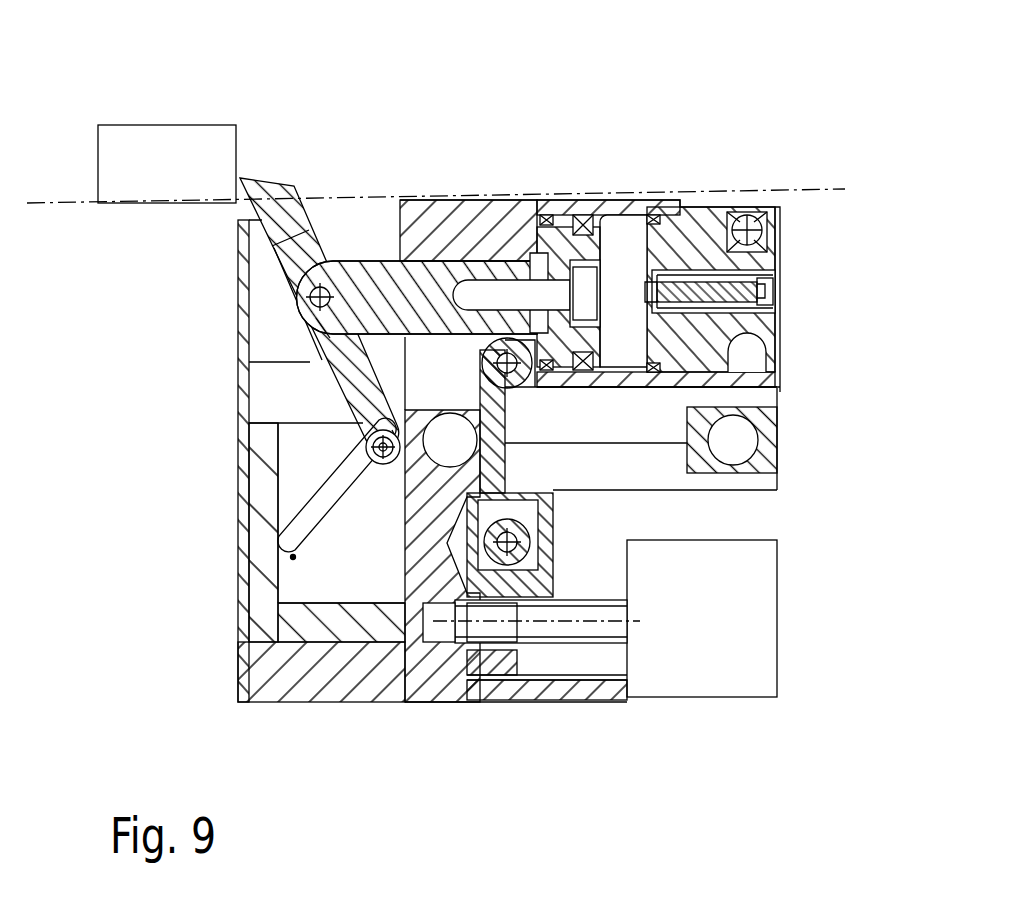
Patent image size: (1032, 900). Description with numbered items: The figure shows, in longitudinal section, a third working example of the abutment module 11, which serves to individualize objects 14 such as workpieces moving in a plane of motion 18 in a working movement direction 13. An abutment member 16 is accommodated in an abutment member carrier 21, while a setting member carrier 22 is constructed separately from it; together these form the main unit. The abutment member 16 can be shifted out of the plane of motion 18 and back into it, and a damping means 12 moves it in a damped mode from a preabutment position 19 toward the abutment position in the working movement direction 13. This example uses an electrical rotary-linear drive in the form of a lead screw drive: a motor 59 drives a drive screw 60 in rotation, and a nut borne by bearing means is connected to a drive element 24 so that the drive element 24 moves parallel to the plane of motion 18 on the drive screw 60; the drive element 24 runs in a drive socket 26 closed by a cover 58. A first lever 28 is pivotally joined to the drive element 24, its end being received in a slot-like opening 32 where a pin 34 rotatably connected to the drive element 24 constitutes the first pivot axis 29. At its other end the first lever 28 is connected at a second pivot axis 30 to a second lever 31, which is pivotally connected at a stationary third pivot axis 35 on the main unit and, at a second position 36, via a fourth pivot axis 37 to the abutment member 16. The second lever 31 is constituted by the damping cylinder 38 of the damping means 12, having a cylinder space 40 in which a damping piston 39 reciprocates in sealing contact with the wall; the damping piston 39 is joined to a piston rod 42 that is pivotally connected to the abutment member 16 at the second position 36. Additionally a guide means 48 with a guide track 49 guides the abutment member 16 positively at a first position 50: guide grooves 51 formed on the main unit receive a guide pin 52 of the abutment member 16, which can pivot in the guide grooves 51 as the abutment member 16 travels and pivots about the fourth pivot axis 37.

The abutment module 11 is at (758, 113).
The damping means 12 is at (784, 255).
The working movement direction 13 is at (500, 148).
The objects 14 is at (140, 142).
The abutment member 16 is at (263, 200).
The plane of motion 18 is at (316, 196).
The preabutment position 19 is at (244, 160).
The abutment member carrier 21 is at (260, 667).
The setting member carrier 22 is at (433, 683).
The drive element 24 is at (490, 580).
The drive socket 26 is at (607, 665).
The first lever 28 is at (498, 427).
The first pivot axis 29 is at (537, 538).
The second pivot axis 30 is at (500, 365).
The second lever 31 is at (598, 218).
The slot-like opening 32 is at (533, 560).
The pin 34 is at (509, 540).
The third pivot axis 35 is at (777, 207).
The second position 36 is at (308, 297).
The fourth pivot axis 37 is at (316, 318).
The damping cylinder 38 is at (763, 330).
The damping piston 39 is at (553, 215).
The cylinder space 40 is at (640, 213).
The piston rod 42 is at (357, 277).
The guide means 48 is at (305, 511).
The guide track 49 is at (293, 557).
The first position 50 is at (378, 449).
The guide grooves 51 is at (337, 507).
The guide pin 52 is at (372, 441).
The cover 58 is at (487, 660).
The motor 59 is at (757, 605).
The drive screw 60 is at (573, 627).